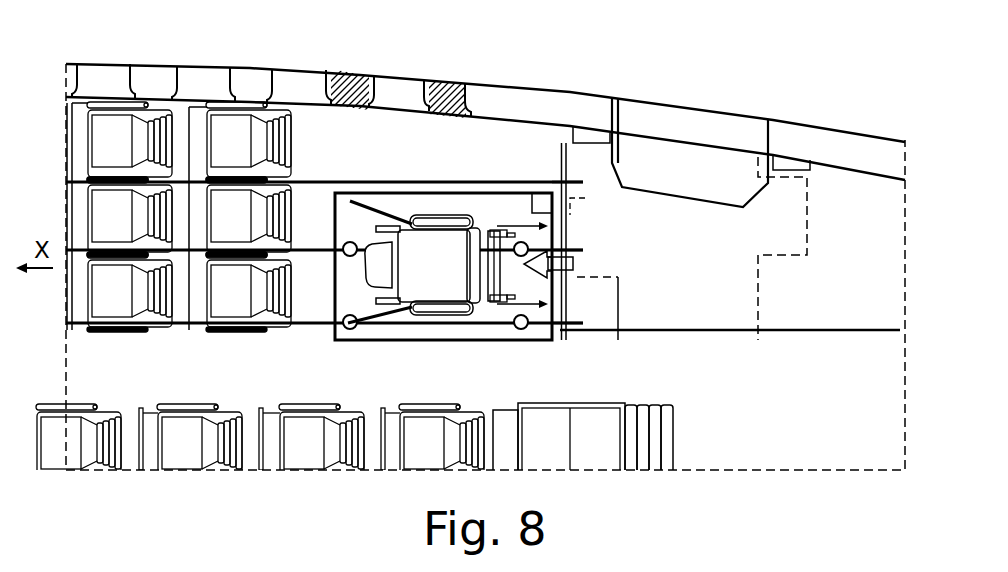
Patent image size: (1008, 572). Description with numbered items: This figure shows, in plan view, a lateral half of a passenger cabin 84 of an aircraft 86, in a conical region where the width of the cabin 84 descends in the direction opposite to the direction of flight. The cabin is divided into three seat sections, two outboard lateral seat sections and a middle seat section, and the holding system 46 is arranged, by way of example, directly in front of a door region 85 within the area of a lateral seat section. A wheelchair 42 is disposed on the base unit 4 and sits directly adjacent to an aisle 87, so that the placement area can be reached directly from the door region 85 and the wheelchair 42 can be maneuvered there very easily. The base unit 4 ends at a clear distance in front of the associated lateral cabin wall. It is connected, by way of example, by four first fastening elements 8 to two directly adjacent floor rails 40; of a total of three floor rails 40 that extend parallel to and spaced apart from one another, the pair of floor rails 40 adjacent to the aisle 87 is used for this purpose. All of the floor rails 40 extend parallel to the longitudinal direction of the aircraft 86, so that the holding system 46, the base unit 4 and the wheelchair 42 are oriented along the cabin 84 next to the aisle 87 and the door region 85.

The base unit 4 is at (405, 332).
The first fastening elements 8 is at (347, 235).
The floor rails 40 is at (305, 242).
The wheelchair 42 is at (455, 290).
The holding system 46 is at (390, 174).
The passenger cabin 84 is at (447, 133).
The door region 85 is at (615, 222).
The aircraft 86 is at (305, 82).
The aisle 87 is at (603, 381).